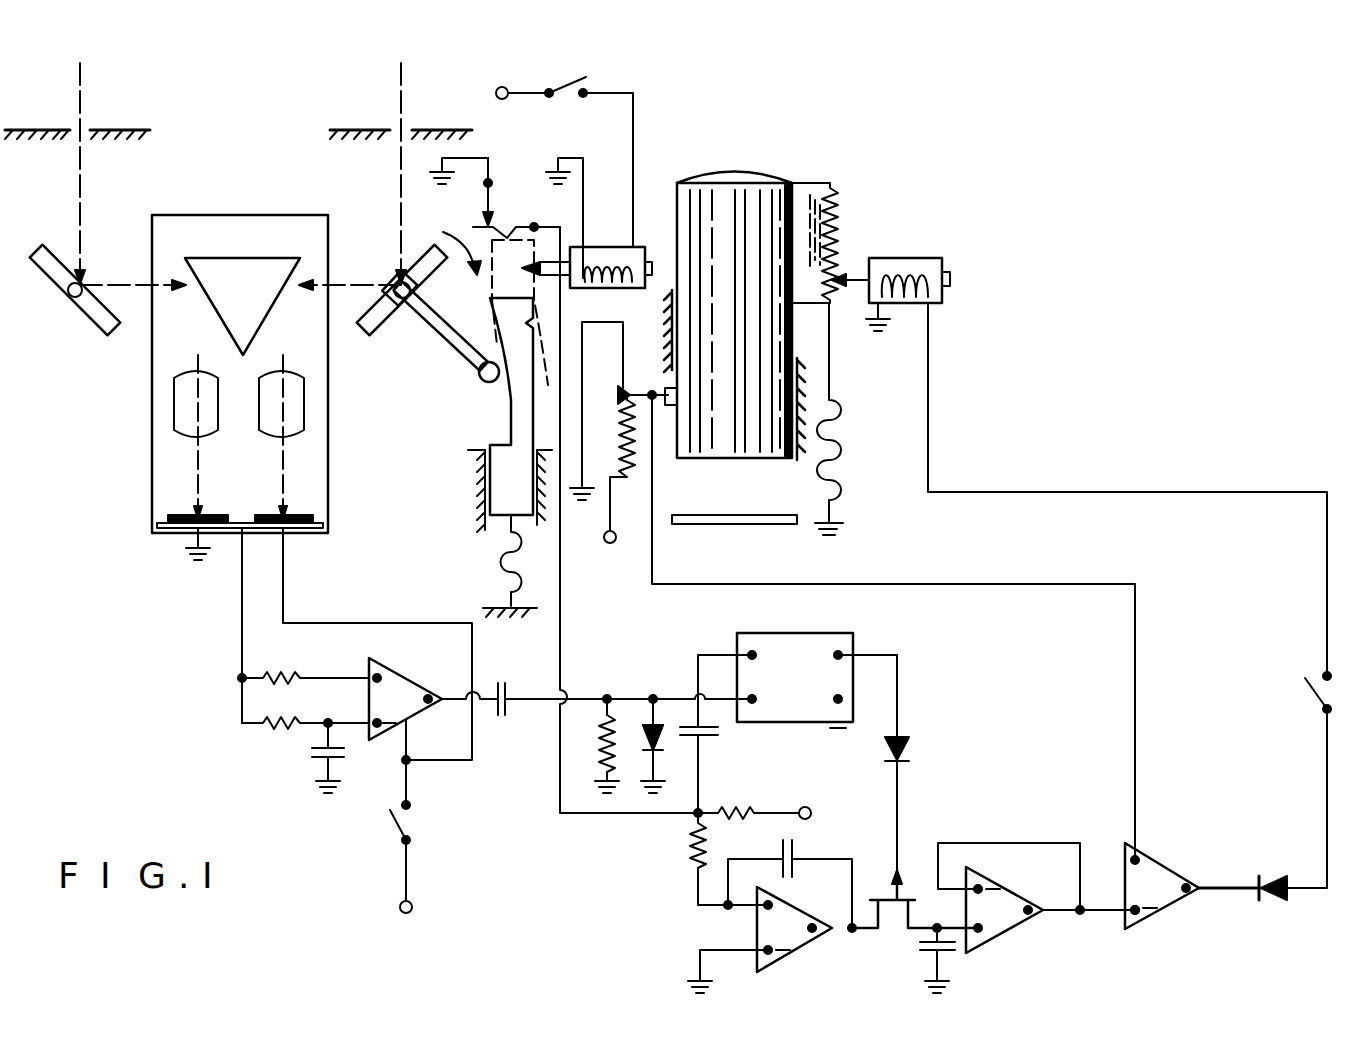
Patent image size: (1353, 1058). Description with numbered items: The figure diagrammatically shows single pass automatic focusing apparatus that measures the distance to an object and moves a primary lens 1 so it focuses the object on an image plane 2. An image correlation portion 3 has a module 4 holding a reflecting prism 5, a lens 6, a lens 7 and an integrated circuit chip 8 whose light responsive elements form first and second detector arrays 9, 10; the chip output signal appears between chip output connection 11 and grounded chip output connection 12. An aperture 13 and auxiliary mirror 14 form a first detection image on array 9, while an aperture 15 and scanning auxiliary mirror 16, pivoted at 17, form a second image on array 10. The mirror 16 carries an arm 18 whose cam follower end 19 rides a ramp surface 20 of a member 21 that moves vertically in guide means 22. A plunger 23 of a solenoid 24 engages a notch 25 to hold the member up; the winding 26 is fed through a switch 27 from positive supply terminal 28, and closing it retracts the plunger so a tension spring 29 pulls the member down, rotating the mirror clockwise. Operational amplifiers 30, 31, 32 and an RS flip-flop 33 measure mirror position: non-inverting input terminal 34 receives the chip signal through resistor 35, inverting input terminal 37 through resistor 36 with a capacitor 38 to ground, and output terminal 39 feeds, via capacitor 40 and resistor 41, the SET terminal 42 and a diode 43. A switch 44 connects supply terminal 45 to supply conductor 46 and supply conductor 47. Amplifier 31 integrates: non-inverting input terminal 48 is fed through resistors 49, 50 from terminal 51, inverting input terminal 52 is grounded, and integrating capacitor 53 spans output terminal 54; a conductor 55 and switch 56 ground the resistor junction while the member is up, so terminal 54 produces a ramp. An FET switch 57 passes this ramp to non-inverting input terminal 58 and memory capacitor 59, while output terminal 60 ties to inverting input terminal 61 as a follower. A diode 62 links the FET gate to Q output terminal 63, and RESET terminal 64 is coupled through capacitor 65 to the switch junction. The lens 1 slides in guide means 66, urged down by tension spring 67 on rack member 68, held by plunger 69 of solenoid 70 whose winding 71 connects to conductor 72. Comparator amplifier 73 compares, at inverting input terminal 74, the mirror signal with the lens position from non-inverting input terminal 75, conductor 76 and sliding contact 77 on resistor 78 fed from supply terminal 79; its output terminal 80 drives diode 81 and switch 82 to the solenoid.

The primary lens 1 is at (745, 175).
The image plane 2 is at (776, 514).
The image correlation portion 3 is at (184, 661).
The module 4 is at (151, 448).
The reflecting prism 5 is at (255, 258).
The lens 6 is at (173, 410).
The lens 7 is at (305, 410).
The integrated circuit chip 8 is at (175, 530).
The first detector array 9 is at (185, 514).
The second detector array 10 is at (296, 514).
The chip output connection 11 is at (240, 628).
The chip output connection 12 is at (192, 550).
The aperture 13 is at (86, 128).
The auxiliary mirror 14 is at (62, 295).
The aperture 15 is at (398, 128).
The scanning auxiliary mirror 16 is at (380, 335).
The pivot 17 is at (394, 288).
The arm 18 is at (455, 352).
The cam follower end 19 is at (478, 375).
The cam or ramp surface 20 is at (505, 410).
The member 21 is at (466, 402).
The guide means 22 is at (470, 468).
The plunger 23 is at (540, 268).
The solenoid 24 is at (605, 289).
The notch 25 is at (528, 320).
The winding 26 is at (615, 258).
The switch 27 is at (596, 84).
The positive supply terminal 28 is at (500, 100).
The tension spring 29 is at (500, 563).
The operational amplifier 30 is at (408, 678).
The operational amplifier 31 is at (812, 942).
The operational amplifier 32 is at (1010, 928).
The RS flip-flop 33 is at (780, 633).
The non-inverting input terminal 34 is at (375, 672).
The resistor 35 is at (278, 675).
The resistor 36 is at (278, 730).
The inverting input terminal 37 is at (377, 728).
The capacitor 38 is at (312, 752).
The output terminal 39 is at (428, 703).
The capacitor 40 is at (506, 712).
The resistor 41 is at (602, 742).
The SET terminal 42 is at (756, 705).
The diode 43 is at (664, 745).
The switch 44 is at (394, 830).
The positive power supply terminal 45 is at (412, 912).
The supply conductor 46 is at (412, 782).
The supply conductor 47 is at (396, 620).
The non-inverting input terminal 48 is at (770, 898).
The resistor 49 is at (690, 846).
The resistor 50 is at (732, 810).
The positive power supply terminal 51 is at (806, 807).
The inverting input terminal 52 is at (772, 954).
The integrating capacitor 53 is at (794, 848).
The output terminal 54 is at (812, 924).
The conductor 55 is at (598, 814).
The switch 56 is at (501, 222).
The FET switch 57 is at (900, 884).
The non-inverting input terminal 58 is at (978, 934).
The memory capacitor 59 is at (920, 948).
The output terminal 60 is at (1034, 916).
The inverting input terminal 61 is at (982, 886).
The diode 62 is at (912, 746).
The Q output terminal 63 is at (850, 656).
The RESET terminal 64 is at (748, 652).
The capacitor 65 is at (710, 736).
The guide means 66 is at (806, 368).
The tension spring 67 is at (841, 474).
The rack member 68 is at (822, 184).
The plunger 69 is at (848, 272).
The solenoid 70 is at (930, 258).
The winding 71 is at (904, 302).
The conductor 72 is at (1310, 574).
The operational amplifier 73 is at (1162, 910).
The inverting input terminal 74 is at (1138, 916).
The non-inverting input terminal 75 is at (1138, 856).
The conductor 76 is at (990, 590).
The sliding contact 77 is at (633, 392).
The resistor 78 is at (632, 470).
The positive supply terminal 79 is at (598, 550).
The output terminal 80 is at (1188, 882).
The diode 81 is at (1272, 875).
The switch 82 is at (1312, 706).